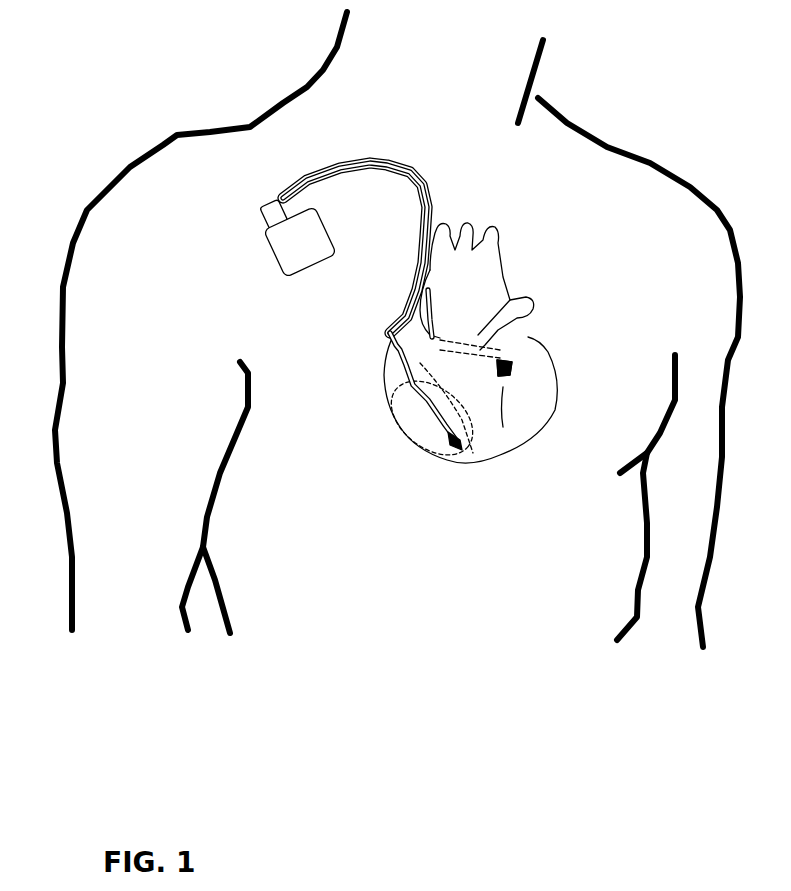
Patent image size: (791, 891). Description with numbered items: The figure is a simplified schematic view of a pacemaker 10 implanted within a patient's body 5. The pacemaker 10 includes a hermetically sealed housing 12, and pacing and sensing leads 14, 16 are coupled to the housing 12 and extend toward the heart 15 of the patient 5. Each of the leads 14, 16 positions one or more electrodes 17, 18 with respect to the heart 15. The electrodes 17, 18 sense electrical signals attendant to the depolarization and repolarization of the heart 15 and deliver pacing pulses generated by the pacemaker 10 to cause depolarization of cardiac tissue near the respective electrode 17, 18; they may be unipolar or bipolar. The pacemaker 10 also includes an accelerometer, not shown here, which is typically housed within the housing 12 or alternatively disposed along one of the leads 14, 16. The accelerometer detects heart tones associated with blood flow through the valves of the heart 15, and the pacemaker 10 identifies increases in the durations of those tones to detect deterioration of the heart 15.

The patient's body 5 is at (112, 180).
The pacemaker 10 is at (264, 264).
The hermetically sealed housing 12 is at (254, 275).
The pacing and sensing lead 14 is at (430, 207).
The heart 15 is at (574, 393).
The pacing and sensing lead 16 is at (418, 212).
The electrode 17 is at (512, 362).
The electrode 18 is at (400, 456).